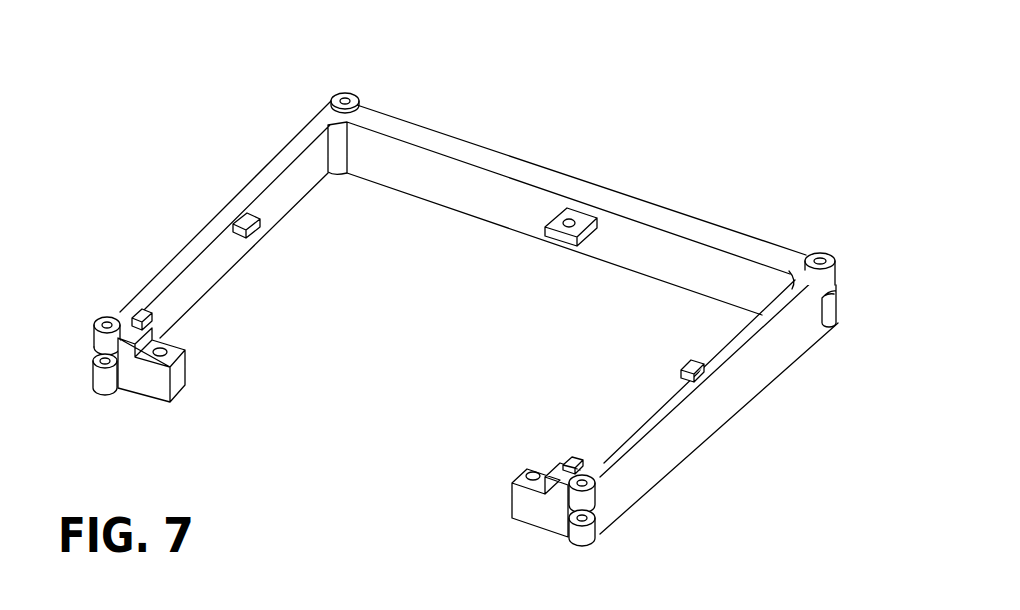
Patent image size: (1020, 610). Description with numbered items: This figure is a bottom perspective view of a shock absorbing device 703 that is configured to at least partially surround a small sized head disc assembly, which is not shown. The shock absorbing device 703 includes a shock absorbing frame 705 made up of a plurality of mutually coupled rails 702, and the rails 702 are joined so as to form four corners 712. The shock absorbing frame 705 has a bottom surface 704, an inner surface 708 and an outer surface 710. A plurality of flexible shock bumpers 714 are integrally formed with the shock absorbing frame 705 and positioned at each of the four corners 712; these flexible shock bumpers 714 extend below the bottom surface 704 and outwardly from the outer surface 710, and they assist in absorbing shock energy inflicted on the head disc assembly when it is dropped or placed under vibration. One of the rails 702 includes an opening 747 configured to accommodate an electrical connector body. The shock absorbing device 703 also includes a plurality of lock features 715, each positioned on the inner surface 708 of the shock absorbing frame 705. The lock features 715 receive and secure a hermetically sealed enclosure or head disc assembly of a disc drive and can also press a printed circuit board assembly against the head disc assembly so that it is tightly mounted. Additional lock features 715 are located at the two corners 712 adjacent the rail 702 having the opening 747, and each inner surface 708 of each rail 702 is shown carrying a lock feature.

The rail 702 is at (282, 146).
The shock absorbing device 703 is at (460, 312).
The bottom surface 704 is at (238, 207).
The shock absorbing frame 705 is at (583, 180).
The inner surface 708 is at (287, 200).
The outer surface 710 is at (127, 382).
The corner 712 is at (316, 110).
The flexible shock bumper 714 is at (352, 95).
The lock feature 715 is at (265, 238).
The opening 747 is at (352, 456).